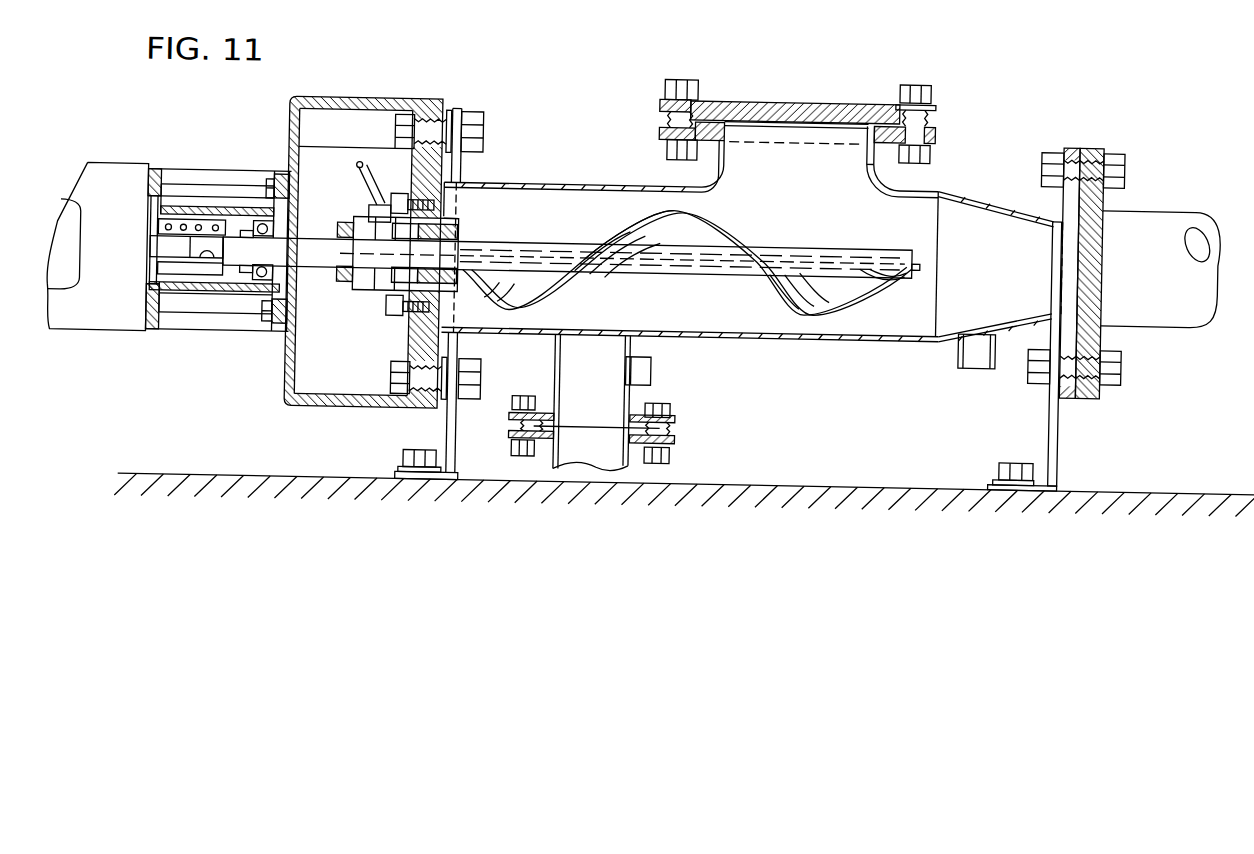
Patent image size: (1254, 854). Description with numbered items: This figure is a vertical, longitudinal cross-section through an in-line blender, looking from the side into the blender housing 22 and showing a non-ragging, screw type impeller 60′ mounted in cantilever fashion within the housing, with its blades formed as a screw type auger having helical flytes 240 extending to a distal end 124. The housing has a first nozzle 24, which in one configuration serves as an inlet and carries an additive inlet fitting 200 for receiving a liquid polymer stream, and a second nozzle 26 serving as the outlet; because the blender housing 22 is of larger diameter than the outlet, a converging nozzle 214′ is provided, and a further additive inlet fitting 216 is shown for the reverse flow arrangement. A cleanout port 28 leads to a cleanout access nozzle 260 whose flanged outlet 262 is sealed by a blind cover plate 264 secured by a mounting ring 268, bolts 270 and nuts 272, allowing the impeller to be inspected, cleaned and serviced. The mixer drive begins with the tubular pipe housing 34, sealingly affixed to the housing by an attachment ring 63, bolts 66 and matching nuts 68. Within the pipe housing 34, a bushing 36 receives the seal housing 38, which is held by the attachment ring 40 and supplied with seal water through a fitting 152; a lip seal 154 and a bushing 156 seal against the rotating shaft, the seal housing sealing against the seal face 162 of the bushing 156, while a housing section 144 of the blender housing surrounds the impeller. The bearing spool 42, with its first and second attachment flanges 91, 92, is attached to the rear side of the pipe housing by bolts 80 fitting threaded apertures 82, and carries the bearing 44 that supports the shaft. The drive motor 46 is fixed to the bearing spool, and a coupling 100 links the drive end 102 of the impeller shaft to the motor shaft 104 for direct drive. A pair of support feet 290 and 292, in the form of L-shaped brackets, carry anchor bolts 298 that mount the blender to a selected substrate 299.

The blender housing 22 is at (600, 172).
The first nozzle 24 is at (640, 393).
The second nozzle 26 is at (1055, 187).
The cleanout port 28 is at (863, 149).
The pipe housing 34 is at (320, 400).
The bushing 36 is at (460, 208).
The seal housing 38 is at (340, 287).
The attachment ring 40 is at (395, 310).
The bearing spool 42 is at (153, 324).
The bearing 44 is at (240, 223).
The drive motor 46 is at (107, 318).
The impeller 60′ is at (612, 232).
The attachment ring 63 is at (446, 102).
The bolt 66 is at (481, 113).
The nut 68 is at (393, 107).
The bolt 80 is at (262, 174).
The aperture 82 is at (298, 167).
The first attachment flange 91 is at (280, 322).
The second attachment flange 92 is at (147, 172).
The coupling 100 is at (187, 224).
The drive end 102 is at (213, 253).
The motor shaft 104 is at (167, 249).
The distal end 124 is at (912, 255).
The housing section 144 is at (530, 181).
The fitting 152 is at (358, 156).
The lip seal 154 is at (458, 224).
The bushing 156 is at (553, 289).
The seal face 162 is at (455, 173).
The additive inlet fitting 200 is at (650, 343).
The converging nozzle 214′ is at (980, 178).
The additive inlet fitting 216 is at (965, 335).
The helical flight 240 is at (718, 216).
The cleanout access nozzle 260 is at (858, 119).
The flanged outlet 262 is at (720, 88).
The blind cover plate 264 is at (835, 99).
The mounting ring 268 is at (937, 122).
The bolt 270 is at (683, 69).
The nut 272 is at (690, 139).
The support foot 290 is at (463, 441).
The support foot 292 is at (1062, 437).
The anchor bolt 298 is at (415, 440).
The substrate 299 is at (838, 462).